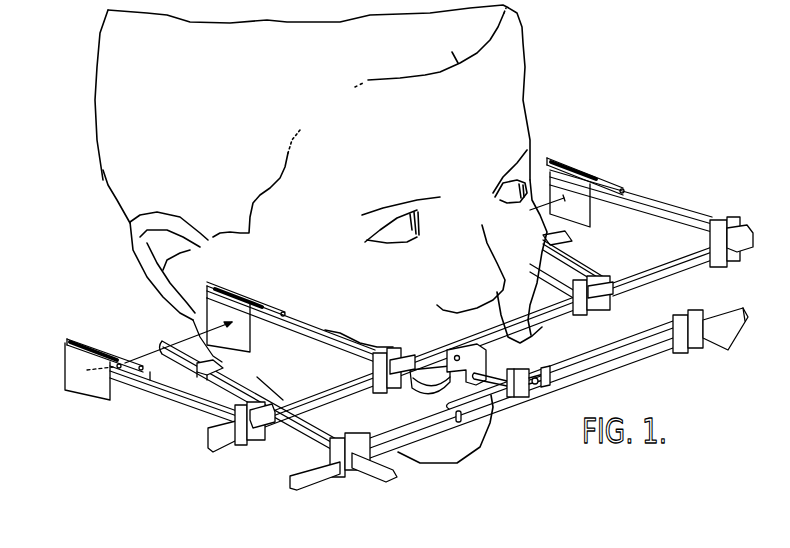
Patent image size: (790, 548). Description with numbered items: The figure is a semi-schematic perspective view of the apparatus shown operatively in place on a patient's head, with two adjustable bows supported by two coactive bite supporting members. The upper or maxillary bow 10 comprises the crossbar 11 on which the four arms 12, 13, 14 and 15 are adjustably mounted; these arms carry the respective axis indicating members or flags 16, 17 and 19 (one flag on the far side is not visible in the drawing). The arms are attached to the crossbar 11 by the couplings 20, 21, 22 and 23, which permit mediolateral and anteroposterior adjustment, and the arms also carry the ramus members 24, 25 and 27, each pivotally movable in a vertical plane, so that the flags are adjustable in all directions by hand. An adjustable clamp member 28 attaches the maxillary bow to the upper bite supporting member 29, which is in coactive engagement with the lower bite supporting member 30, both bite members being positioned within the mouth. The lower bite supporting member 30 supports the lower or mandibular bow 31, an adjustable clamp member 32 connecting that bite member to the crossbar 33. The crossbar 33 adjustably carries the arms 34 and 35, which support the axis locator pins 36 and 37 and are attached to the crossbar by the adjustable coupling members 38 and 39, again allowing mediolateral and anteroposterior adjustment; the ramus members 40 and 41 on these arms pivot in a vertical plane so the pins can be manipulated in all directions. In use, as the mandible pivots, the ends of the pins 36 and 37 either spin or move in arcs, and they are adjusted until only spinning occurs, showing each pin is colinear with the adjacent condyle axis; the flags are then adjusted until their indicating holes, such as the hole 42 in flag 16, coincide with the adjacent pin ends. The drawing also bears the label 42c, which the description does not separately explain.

The maxillary bow 10 is at (647, 263).
The crossbar 11 is at (553, 320).
The arm 12 is at (173, 393).
The arm 13 is at (305, 343).
The arm 14 is at (570, 273).
The arm 15 is at (681, 212).
The axis indicating member 16 is at (110, 387).
The axis indicating member 17 is at (249, 342).
The axis indicating member 19 is at (591, 211).
The coupling 20 is at (257, 441).
The coupling 21 is at (398, 393).
The coupling 22 is at (599, 312).
The coupling 23 is at (724, 262).
The ramus member 24 is at (113, 365).
The ramus member 25 is at (267, 286).
The ramus member 27 is at (597, 180).
The adjustable clamp member 28 is at (455, 362).
The upper bite supporting member 29 is at (450, 368).
The lower bite supporting member 30 is at (438, 395).
The mandibular bow 31 is at (595, 383).
The adjustable clamp member 32 is at (521, 397).
The crossbar 33 is at (640, 362).
The arm 34 is at (328, 437).
The arm 35 is at (673, 311).
The axis locator pin 36 is at (150, 372).
The axis locator pin 37 is at (540, 175).
The adjustable coupling member 38 is at (363, 480).
The adjustable coupling member 39 is at (697, 350).
The ramus member 40 is at (213, 358).
The ramus member 41 is at (549, 238).
The hole 42 is at (85, 374).
The graduated sleeve 42c is at (574, 205).